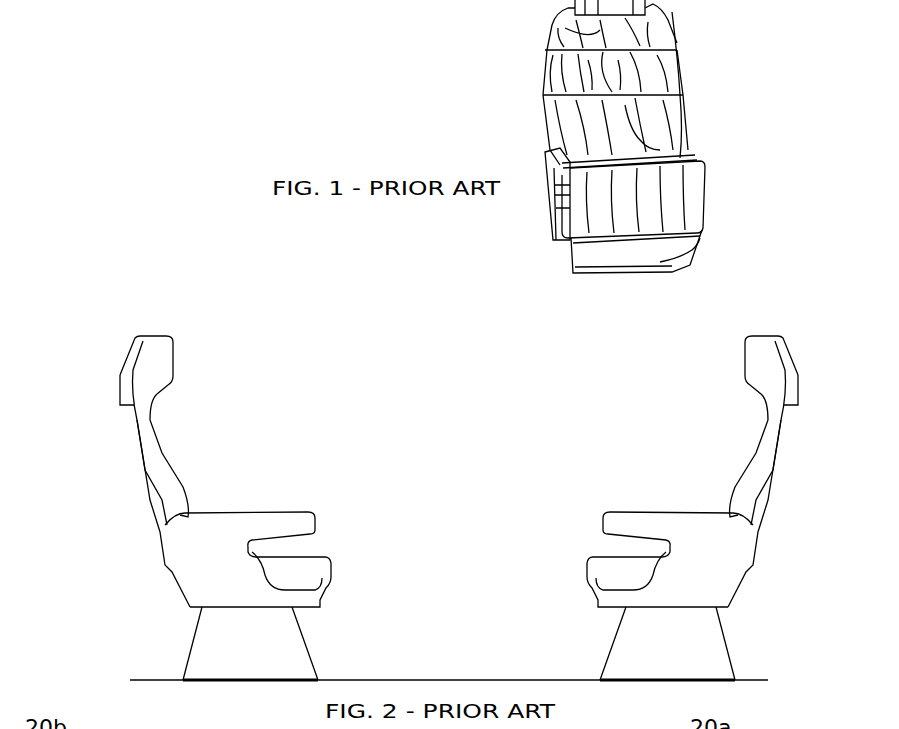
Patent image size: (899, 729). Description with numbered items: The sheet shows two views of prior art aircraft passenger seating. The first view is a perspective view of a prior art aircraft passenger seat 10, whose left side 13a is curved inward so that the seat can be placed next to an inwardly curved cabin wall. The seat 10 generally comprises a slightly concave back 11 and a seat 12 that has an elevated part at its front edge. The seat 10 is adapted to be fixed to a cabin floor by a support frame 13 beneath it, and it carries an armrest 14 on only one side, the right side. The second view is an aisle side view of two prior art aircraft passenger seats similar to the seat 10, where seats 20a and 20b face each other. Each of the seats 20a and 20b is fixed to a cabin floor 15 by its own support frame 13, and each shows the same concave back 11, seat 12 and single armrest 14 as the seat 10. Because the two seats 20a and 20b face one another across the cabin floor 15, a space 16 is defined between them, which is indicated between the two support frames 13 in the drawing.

In FIG. 1, the aircraft passenger seat 10 is at (520, 73).
In FIG. 1, the back 11 is at (657, 84).
In FIG. 2, the back 11 is at (139, 376).
In FIG. 1, the seat 12 is at (658, 170).
In FIG. 2, the seat 12 is at (313, 548).
In FIG. 1, the support frame 13 is at (570, 271).
In FIG. 2, the support frame 13 is at (200, 651).
In FIG. 1, the left side 13a is at (696, 246).
In FIG. 1, the armrest 14 is at (553, 172).
In FIG. 2, the armrest 14 is at (272, 516).
In FIG. 2, the cabin floor 15 is at (152, 677).
In FIG. 2, the space 16 is at (437, 606).
In FIG. 2, the aircraft passenger seat 20a is at (107, 420).
In FIG. 2, the aircraft passenger seat 20b is at (728, 378).